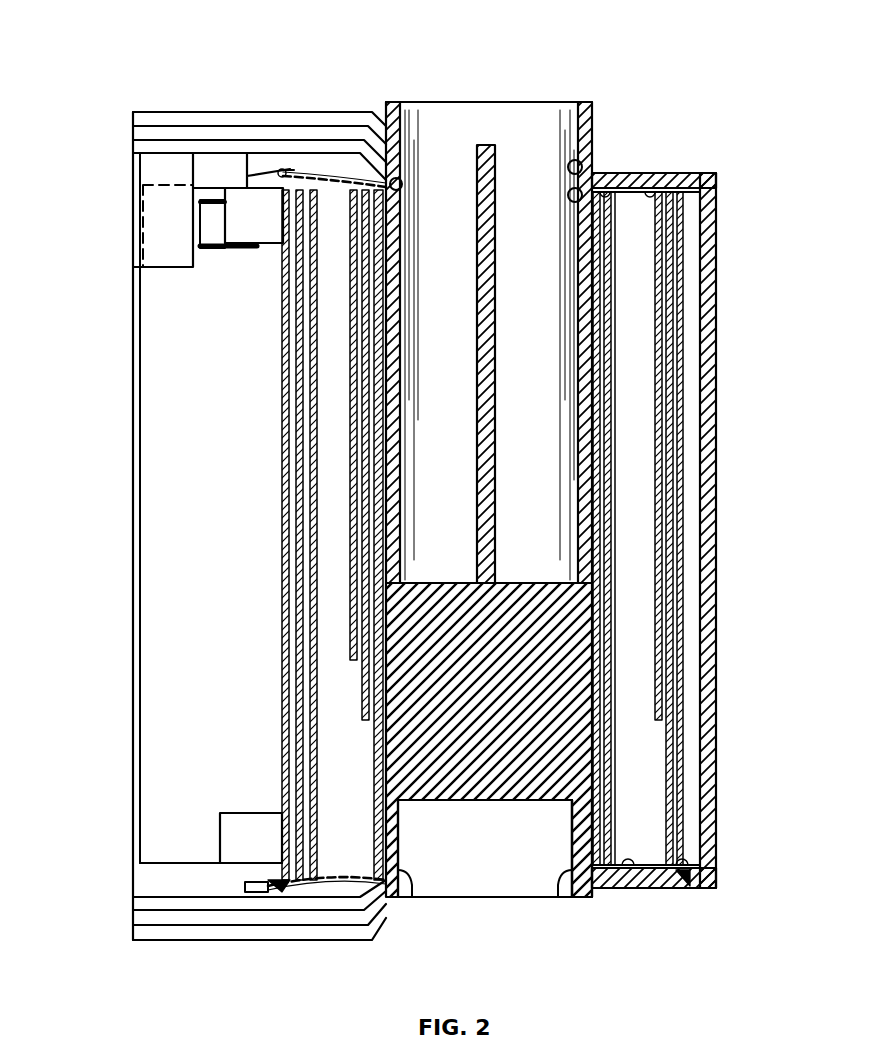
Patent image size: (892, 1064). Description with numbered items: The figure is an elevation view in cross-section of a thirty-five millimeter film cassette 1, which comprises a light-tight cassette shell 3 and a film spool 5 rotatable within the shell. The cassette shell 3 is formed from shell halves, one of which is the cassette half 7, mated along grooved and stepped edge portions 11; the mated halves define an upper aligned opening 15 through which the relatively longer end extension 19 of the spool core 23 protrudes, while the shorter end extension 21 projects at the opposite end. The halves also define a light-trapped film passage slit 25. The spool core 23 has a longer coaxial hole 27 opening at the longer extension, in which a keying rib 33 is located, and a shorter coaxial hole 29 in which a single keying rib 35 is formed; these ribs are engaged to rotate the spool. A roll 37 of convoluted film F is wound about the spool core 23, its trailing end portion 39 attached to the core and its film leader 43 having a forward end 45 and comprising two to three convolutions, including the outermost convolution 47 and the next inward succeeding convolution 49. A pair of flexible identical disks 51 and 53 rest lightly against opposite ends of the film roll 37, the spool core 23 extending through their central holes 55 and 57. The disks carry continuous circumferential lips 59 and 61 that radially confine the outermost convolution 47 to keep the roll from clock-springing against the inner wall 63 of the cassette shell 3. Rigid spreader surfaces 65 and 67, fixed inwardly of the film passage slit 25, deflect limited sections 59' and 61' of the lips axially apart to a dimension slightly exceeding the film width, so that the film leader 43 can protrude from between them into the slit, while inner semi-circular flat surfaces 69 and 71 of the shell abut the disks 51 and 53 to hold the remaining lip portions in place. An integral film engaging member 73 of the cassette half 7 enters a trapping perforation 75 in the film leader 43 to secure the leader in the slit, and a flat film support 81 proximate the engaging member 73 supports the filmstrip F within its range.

The film cassette 1 is at (218, 96).
The cassette shell 3 is at (716, 828).
The film spool 5 is at (692, 630).
The shell half 7 is at (268, 112).
The grooved and stepped edge portion 11 is at (146, 128).
The upper aligned opening 15 is at (590, 176).
The longer opposite end extension 19 is at (590, 108).
The shorter opposite end extension 21 is at (580, 900).
The spool core 23 is at (528, 592).
The film passage slit 25 is at (160, 306).
The longer coaxial hole 27 is at (458, 114).
The shorter coaxial hole 29 is at (470, 884).
The keying rib 33 is at (498, 180).
The keying rib 35 is at (516, 802).
The film roll 37 is at (288, 346).
The trailing end portion 39 is at (578, 396).
The film leader 43 is at (176, 680).
The forward end 45 is at (140, 574).
The outermost convolution 47 is at (288, 400).
The next inward succeeding convolution 49 is at (288, 441).
The flexible disk 51 is at (298, 158).
The flexible disk 53 is at (684, 888).
The central hole 55 is at (400, 184).
The central hole 57 is at (398, 897).
The circumferential lip 59 is at (684, 200).
The limited section of lip 59' is at (241, 170).
The circumferential lip 61 is at (684, 862).
The limited section of lip 61' is at (280, 883).
The inner wall 63 is at (704, 520).
The spreader surface 65 is at (246, 189).
The spreader surface 67 is at (238, 863).
The inner semi-circular flat surface 69 is at (646, 176).
The inner semi-circular flat surface 71 is at (640, 868).
The film engaging member 73 is at (222, 244).
The trapping perforation 75 is at (212, 242).
The film support 81 is at (148, 238).
The film F is at (276, 515).